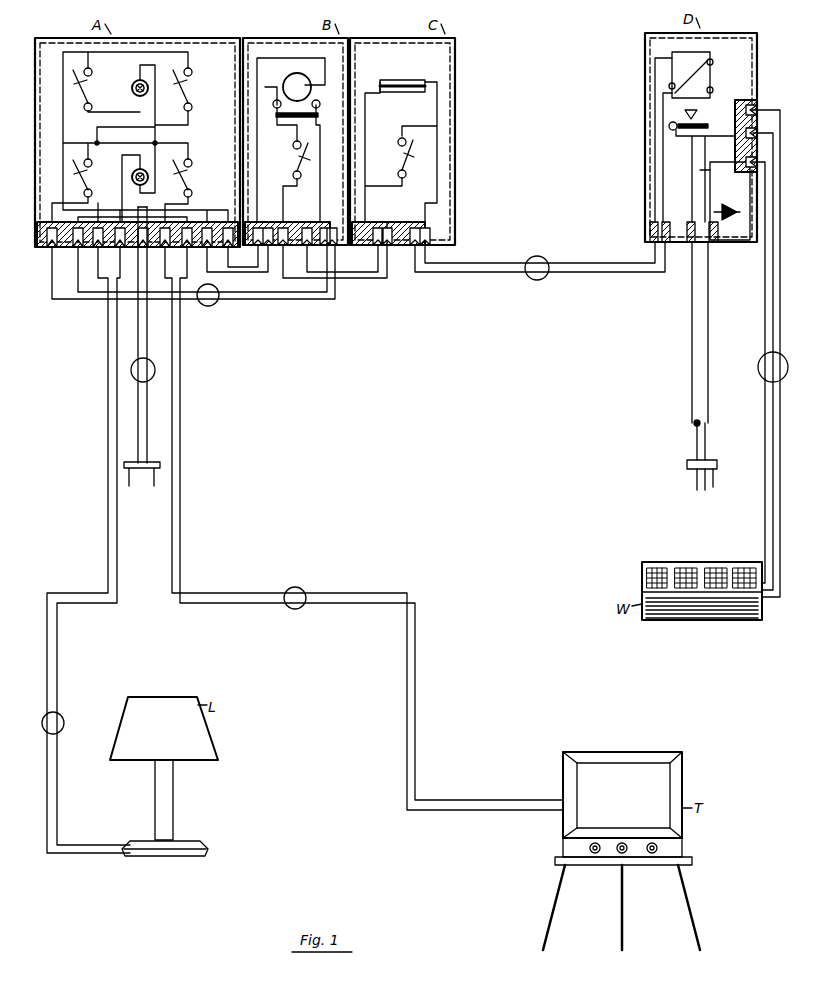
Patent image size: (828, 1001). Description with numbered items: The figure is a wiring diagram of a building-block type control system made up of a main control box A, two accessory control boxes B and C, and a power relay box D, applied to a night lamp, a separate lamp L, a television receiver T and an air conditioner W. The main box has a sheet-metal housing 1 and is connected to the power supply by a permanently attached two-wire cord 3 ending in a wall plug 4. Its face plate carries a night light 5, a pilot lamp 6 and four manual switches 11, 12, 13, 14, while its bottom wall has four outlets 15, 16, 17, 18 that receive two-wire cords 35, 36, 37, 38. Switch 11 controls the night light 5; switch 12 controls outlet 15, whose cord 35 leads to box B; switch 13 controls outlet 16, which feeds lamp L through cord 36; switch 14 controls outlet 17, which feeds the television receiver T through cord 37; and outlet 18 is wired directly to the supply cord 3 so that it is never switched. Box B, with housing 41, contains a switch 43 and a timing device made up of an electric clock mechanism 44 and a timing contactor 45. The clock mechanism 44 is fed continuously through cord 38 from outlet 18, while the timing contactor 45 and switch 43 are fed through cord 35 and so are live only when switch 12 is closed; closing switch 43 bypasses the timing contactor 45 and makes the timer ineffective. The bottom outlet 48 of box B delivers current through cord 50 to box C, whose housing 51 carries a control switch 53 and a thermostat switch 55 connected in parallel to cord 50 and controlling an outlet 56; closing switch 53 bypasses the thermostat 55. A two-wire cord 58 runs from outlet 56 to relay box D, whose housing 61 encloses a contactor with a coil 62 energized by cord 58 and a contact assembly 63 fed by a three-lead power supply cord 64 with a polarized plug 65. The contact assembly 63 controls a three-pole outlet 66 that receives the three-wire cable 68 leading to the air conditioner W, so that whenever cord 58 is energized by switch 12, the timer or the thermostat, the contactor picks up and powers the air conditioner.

The housing 1 is at (37, 122).
The two-wire cord 3 is at (147, 320).
The wall plug 4 is at (146, 470).
The night light 5 is at (131, 88).
The pilot lamp 6 is at (141, 172).
The manual switch 11 is at (84, 82).
The manual switch 12 is at (85, 177).
The manual switch 13 is at (184, 85).
The manual switch 14 is at (182, 178).
The outlet 15 is at (66, 250).
The outlet 16 is at (113, 250).
The outlet 17 is at (181, 250).
The outlet 18 is at (223, 250).
The two-wire cord 35 is at (292, 298).
The two-wire cord 36 is at (108, 466).
The two-wire cord 37 is at (180, 466).
The two-wire cord 38 is at (260, 270).
The housing 41 is at (289, 34).
The switch 43 is at (302, 160).
The electric clock mechanism 44 is at (298, 78).
The timing contactor 45 is at (306, 116).
The outlet 48 is at (300, 250).
The cord 50 is at (367, 279).
The housing 51 is at (455, 66).
The control switch 53 is at (400, 158).
The thermostat switch 55 is at (420, 74).
The outlet 56 is at (405, 252).
The two-wire cord 58 is at (481, 274).
The housing 61 is at (646, 100).
The coil 62 is at (712, 72).
The contact assembly 63 is at (702, 117).
The three-lead power supply cord 64 is at (692, 350).
The polarized power supply plug 65 is at (719, 466).
The three-pole outlet 66 is at (756, 136).
The three-wire cable 68 is at (770, 268).